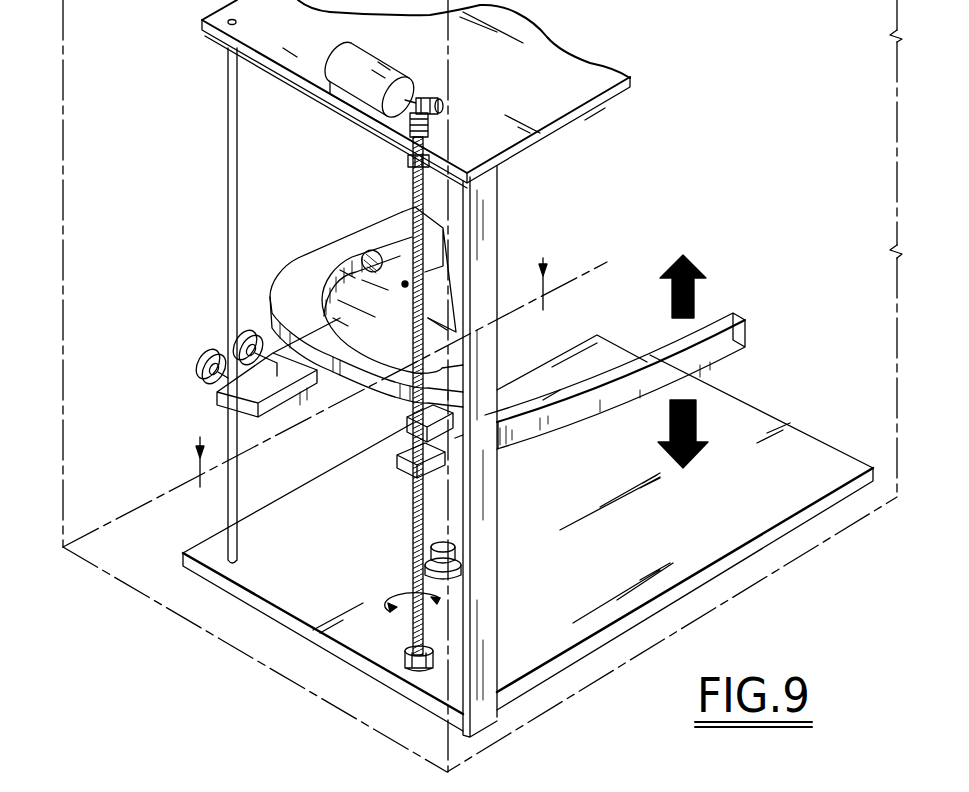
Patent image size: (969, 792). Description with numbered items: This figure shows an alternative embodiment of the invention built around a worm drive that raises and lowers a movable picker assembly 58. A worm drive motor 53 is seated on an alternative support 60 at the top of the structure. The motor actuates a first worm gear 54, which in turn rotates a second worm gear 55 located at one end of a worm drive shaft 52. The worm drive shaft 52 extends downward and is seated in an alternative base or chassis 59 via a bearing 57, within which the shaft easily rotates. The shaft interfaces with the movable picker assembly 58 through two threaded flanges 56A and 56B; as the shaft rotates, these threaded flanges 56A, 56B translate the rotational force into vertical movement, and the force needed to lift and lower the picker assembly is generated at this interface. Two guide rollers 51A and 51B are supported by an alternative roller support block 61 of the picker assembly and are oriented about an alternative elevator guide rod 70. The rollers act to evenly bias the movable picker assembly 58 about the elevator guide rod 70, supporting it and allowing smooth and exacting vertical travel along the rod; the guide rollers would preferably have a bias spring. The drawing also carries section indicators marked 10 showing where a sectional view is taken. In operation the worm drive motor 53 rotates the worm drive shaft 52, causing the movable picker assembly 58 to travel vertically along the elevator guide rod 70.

The section line 10- 10 is at (335, 402).
The guide roller 51A is at (217, 350).
The guide roller 51B is at (247, 334).
The worm drive shaft 52 is at (413, 200).
The worm drive motor 53 is at (386, 72).
The first worm gear 54 is at (430, 100).
The second worm gear 55 is at (430, 128).
The threaded flange 56A is at (405, 425).
The threaded flange 56B is at (402, 470).
The bearing 57 is at (410, 152).
The movable picker assembly 58 is at (723, 320).
The base or chassis 59 is at (748, 548).
The support 60 is at (336, 31).
The roller support block 61 is at (217, 398).
The elevator guide rod 70 is at (227, 208).